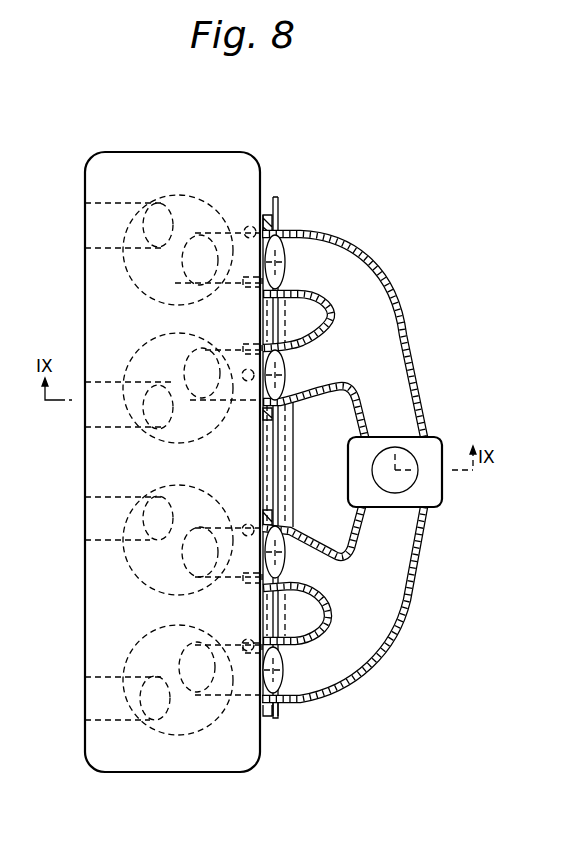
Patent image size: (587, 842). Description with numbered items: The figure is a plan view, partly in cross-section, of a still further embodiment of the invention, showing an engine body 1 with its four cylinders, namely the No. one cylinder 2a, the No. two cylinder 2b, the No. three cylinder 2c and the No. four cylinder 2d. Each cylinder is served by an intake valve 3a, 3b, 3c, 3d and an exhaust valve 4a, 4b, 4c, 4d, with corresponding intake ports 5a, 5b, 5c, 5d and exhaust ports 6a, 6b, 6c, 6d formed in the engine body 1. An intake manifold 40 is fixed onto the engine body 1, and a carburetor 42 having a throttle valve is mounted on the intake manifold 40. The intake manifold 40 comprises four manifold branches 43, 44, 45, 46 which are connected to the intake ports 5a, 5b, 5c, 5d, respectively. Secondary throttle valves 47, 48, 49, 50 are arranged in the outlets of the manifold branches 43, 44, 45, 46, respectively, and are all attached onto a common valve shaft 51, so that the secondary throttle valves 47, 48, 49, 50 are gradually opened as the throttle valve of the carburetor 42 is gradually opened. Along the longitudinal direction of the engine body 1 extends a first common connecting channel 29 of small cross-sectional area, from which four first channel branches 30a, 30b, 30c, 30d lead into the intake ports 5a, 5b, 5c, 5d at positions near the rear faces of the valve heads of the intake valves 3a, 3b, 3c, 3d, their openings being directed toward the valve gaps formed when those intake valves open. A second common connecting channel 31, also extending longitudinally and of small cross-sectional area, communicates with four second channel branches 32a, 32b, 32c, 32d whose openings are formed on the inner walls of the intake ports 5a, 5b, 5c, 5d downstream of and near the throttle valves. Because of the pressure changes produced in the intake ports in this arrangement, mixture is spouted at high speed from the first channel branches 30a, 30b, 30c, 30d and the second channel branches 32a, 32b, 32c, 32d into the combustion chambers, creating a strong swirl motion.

The engine body 1 is at (271, 164).
The No. 1 cylinder 2a is at (134, 278).
The No. 2 cylinder 2b is at (124, 442).
The No. 3 cylinder 2c is at (124, 566).
The No. 4 cylinder 2d is at (154, 736).
The intake valve 3a is at (207, 208).
The intake valve 3b is at (192, 342).
The intake valve 3c is at (203, 498).
The intake valve 3d is at (193, 641).
The exhaust valve 4a is at (160, 204).
The exhaust valve 4b is at (148, 346).
The exhaust valve 4c is at (158, 497).
The exhaust valve 4d is at (147, 642).
The intake port 5a is at (246, 226).
The intake port 5b is at (247, 383).
The intake port 5c is at (245, 524).
The intake port 5d is at (250, 656).
The exhaust port 6a is at (100, 204).
The exhaust port 6b is at (103, 382).
The exhaust port 6c is at (102, 497).
The exhaust port 6d is at (102, 677).
The first common connecting channel 29 is at (286, 468).
The first channel branch 30a is at (243, 287).
The first channel branch 30b is at (236, 343).
The first channel branch 30c is at (237, 593).
The first channel branch 30d is at (237, 639).
The second common connecting channel 31 is at (290, 486).
The second channel branch 32a is at (272, 206).
The second channel branch 32b is at (292, 358).
The second channel branch 32c is at (303, 613).
The second channel branch 32d is at (266, 720).
The intake manifold 40 is at (345, 459).
The carburetor 42 is at (437, 440).
The manifold branch 43 is at (321, 237).
The manifold branch 44 is at (357, 394).
The manifold branch 45 is at (354, 541).
The manifold branch 46 is at (337, 702).
The secondary throttle valve 47 is at (282, 250).
The secondary throttle valve 48 is at (289, 404).
The secondary throttle valve 49 is at (290, 531).
The secondary throttle valve 50 is at (296, 701).
The common valve shaft 51 is at (276, 720).